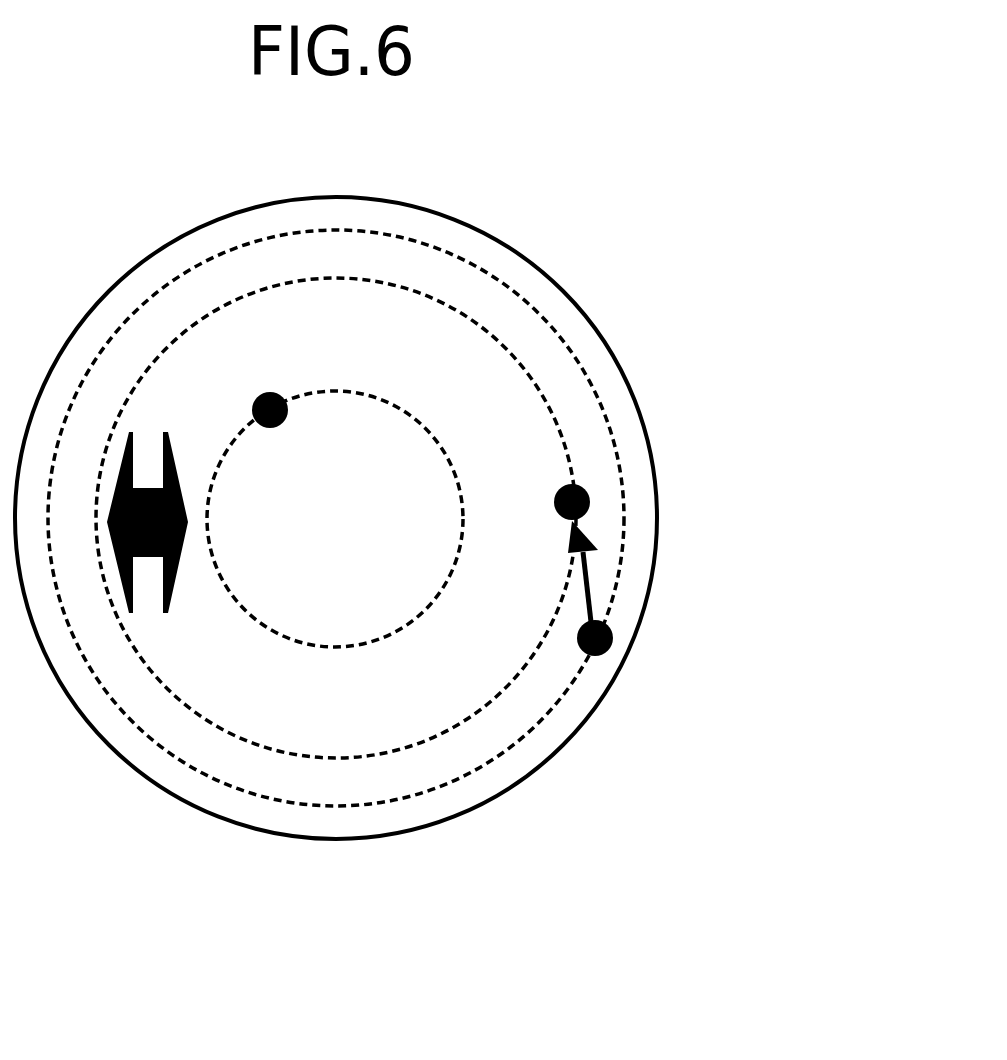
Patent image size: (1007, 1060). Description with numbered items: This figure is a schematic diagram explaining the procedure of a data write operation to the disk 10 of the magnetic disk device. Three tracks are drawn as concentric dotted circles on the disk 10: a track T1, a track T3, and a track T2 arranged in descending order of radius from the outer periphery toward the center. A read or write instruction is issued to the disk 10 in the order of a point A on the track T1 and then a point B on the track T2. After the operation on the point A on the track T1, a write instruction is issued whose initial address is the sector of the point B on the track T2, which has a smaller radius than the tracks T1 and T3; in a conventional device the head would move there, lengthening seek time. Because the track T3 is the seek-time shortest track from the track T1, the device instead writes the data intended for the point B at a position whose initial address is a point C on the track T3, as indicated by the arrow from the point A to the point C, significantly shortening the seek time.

The disk 10 is at (552, 277).
The track T1 is at (616, 455).
The track T2 is at (298, 645).
The track T3 is at (505, 690).
The point A is at (595, 657).
The point B is at (265, 390).
The point C is at (556, 503).